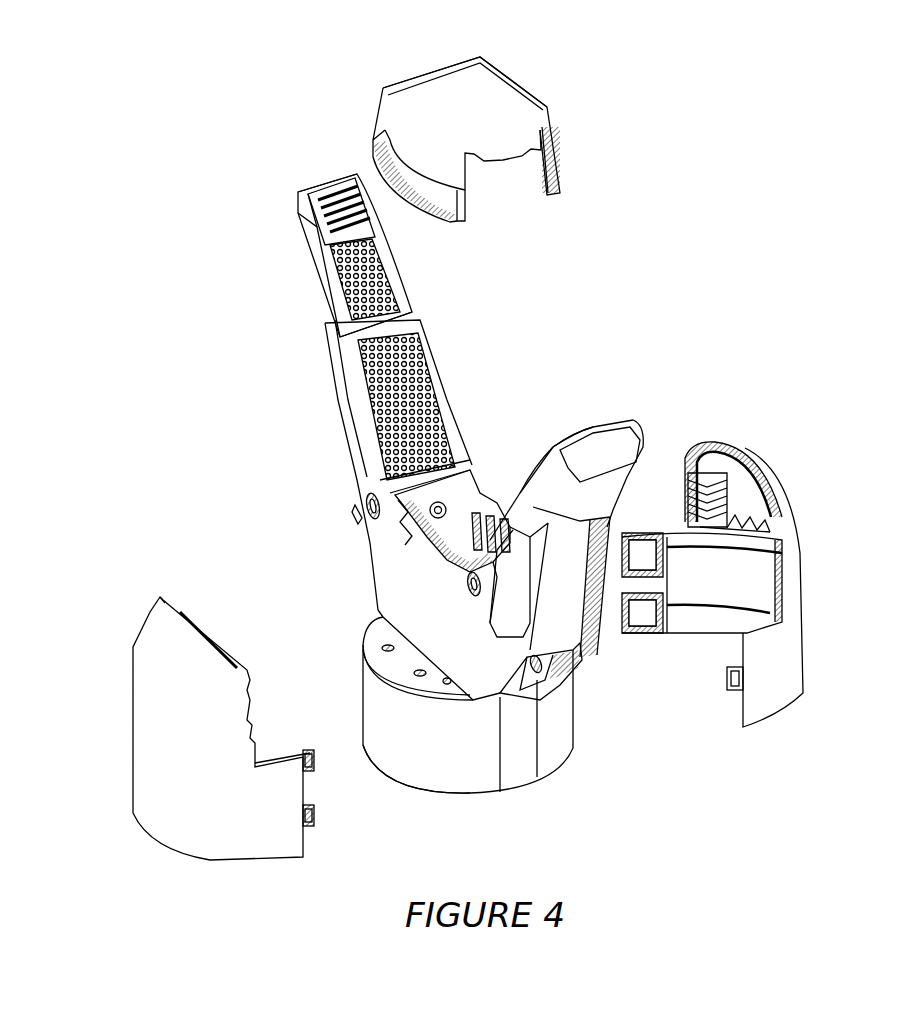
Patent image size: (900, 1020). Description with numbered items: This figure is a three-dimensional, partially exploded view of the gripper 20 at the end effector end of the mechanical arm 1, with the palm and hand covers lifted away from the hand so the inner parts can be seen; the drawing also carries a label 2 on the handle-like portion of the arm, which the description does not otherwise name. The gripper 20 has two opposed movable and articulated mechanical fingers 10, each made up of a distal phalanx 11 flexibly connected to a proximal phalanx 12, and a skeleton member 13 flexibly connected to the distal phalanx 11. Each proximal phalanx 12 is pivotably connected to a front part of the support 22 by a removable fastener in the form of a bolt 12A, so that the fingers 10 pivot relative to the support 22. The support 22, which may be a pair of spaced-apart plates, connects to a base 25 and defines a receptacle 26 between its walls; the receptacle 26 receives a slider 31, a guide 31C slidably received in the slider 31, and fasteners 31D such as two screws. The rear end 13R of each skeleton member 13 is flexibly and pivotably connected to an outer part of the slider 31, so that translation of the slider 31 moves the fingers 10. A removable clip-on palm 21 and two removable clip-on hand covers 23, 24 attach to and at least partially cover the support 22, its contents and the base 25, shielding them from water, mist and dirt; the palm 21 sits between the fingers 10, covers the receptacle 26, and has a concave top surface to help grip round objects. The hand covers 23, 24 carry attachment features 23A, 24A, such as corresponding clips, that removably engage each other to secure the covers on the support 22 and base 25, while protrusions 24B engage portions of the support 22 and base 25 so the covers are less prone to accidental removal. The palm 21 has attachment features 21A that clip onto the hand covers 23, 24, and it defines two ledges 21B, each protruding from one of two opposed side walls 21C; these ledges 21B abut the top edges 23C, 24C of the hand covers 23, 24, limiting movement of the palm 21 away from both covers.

The mechanical arm 1 is at (305, 215).
The handle lower grip 2 is at (420, 372).
The mechanical fingers 10 is at (300, 337).
The distal phalanx 11 is at (630, 427).
The proximal phalanx 12 is at (523, 533).
The bolt 12A is at (364, 502).
The skeleton member 13 is at (580, 613).
The rear end of skeleton member 13R is at (358, 514).
The gripper 20 is at (115, 238).
The clip-on palm 21 is at (477, 125).
The attachment features of palm 21A is at (511, 203).
The ledges 21B is at (409, 184).
The side walls 21C is at (543, 94).
The support 22 is at (443, 613).
The clip-on hand cover 23 is at (209, 768).
The attachment features of hand cover 23A is at (312, 855).
The top edge of hand cover 23C is at (192, 622).
The clip-on hand cover 24 is at (729, 584).
The attachment features of hand cover 24A is at (627, 646).
The protrusions 24B is at (681, 484).
The top edge of hand cover 24C is at (752, 456).
The base 25 is at (443, 751).
The receptacle 26 is at (412, 508).
The slider 31 is at (534, 690).
The guide 31C is at (458, 518).
The fasteners 31D is at (438, 500).